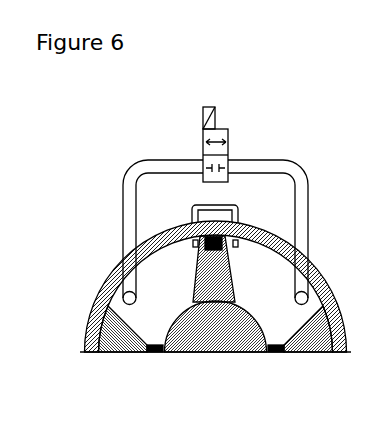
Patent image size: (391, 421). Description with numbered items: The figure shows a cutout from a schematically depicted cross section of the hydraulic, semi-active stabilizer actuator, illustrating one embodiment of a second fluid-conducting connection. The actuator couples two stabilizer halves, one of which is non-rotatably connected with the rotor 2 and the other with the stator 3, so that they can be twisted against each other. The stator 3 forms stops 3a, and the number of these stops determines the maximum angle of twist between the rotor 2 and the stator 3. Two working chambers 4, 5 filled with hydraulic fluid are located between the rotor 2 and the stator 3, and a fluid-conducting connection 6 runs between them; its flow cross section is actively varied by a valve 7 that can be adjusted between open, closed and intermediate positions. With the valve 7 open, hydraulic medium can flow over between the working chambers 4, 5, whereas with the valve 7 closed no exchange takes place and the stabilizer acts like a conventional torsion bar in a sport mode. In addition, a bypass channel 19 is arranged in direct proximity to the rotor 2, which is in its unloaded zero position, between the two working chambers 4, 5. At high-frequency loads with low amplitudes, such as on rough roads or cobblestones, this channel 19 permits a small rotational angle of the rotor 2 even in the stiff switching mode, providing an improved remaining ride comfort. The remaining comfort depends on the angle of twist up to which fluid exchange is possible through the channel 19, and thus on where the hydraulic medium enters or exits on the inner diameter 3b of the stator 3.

The rotor 2 is at (200, 277).
The stator 3 is at (137, 333).
The stops 3a is at (113, 343).
The inner diameter of the stator 3b is at (175, 240).
The working chamber 4 is at (157, 280).
The working chamber 5 is at (262, 293).
The fluid-conducting connection 6 is at (302, 192).
The valve 7 is at (217, 135).
The bypass channel 19 is at (230, 205).